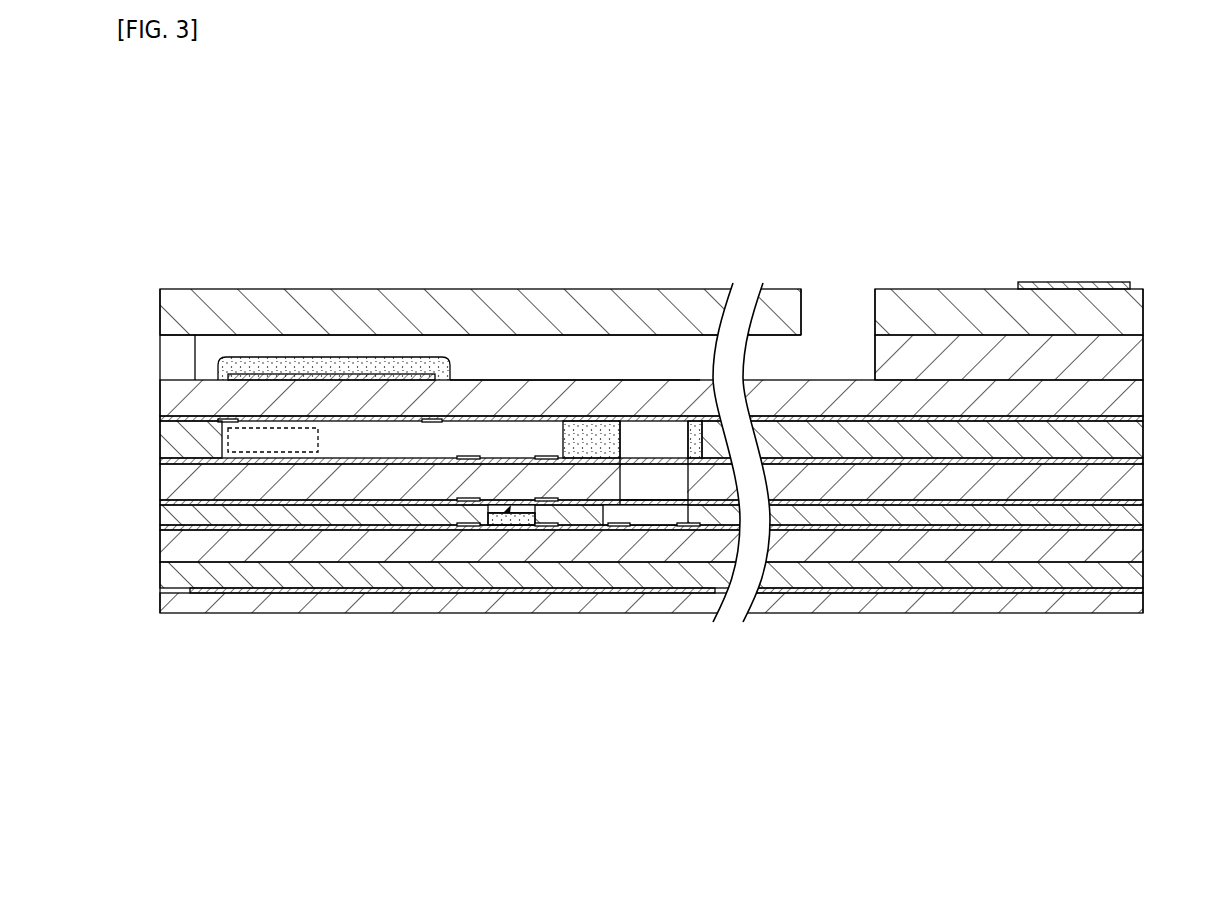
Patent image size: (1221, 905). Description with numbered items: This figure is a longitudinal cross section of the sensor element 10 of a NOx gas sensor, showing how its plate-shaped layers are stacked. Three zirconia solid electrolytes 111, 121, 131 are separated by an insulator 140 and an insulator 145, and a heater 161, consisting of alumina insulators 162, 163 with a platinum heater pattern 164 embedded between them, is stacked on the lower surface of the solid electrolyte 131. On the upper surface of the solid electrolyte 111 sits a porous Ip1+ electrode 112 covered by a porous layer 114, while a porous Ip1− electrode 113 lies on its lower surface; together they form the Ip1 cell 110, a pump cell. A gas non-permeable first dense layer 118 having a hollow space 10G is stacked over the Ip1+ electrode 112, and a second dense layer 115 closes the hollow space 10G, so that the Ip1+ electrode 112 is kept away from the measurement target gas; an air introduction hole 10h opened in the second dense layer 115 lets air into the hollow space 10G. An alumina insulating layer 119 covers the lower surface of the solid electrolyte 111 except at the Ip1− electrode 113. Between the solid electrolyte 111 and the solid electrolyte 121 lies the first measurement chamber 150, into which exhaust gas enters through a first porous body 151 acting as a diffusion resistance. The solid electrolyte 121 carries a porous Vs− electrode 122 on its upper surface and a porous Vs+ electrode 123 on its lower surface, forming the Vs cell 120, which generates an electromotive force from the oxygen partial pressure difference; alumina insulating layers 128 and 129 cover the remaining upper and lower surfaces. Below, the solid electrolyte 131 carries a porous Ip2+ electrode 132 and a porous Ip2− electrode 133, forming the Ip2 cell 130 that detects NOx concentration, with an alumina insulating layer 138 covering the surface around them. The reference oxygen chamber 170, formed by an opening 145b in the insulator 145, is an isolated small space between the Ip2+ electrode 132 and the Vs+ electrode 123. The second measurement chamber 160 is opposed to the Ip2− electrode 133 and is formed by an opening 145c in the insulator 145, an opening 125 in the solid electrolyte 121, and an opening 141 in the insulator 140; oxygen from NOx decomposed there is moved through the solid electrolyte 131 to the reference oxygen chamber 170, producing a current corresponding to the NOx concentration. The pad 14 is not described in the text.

The sensor element 10 is at (723, 195).
The hollow space 10G is at (551, 350).
The air introduction hole 10h is at (825, 296).
The conductive pad 14 is at (1069, 282).
The Ip1 cell 110 is at (99, 365).
The solid electrolyte 111 is at (178, 392).
The Ip1+ electrode 112 is at (228, 376).
The Ip1− electrode 113 is at (178, 416).
The porous layer 114 is at (404, 357).
The second dense layer 115 is at (178, 306).
The first dense layer 118 is at (178, 342).
The alumina insulating layer 119 is at (500, 414).
The Vs cell 120 is at (593, 466).
The solid electrolyte 121 is at (178, 481).
The Vs− electrode 122 is at (495, 457).
The Vs+ electrode 123 is at (507, 509).
The opening 125 is at (683, 486).
The alumina insulating layer 128 is at (178, 461).
The alumina insulating layer 129 is at (178, 502).
The Ip2 cell 130 is at (593, 542).
The solid electrolyte 131 is at (178, 545).
The Ip2+ electrode 132 is at (506, 528).
The Ip2− electrode 133 is at (675, 521).
The alumina insulating layer 138 is at (1120, 533).
The insulator 140 is at (1125, 440).
The opening 141 is at (678, 445).
The insulator 145 is at (178, 515).
The opening 145b is at (527, 518).
The opening 145c is at (606, 523).
The first measurement chamber 150 is at (398, 449).
The first porous body 151 is at (228, 440).
The second measurement chamber 160 is at (675, 449).
The heater 161 is at (99, 560).
The insulator 162 is at (178, 575).
The insulator 163 is at (178, 603).
The heater pattern 164 is at (192, 590).
The reference oxygen chamber 170 is at (488, 522).